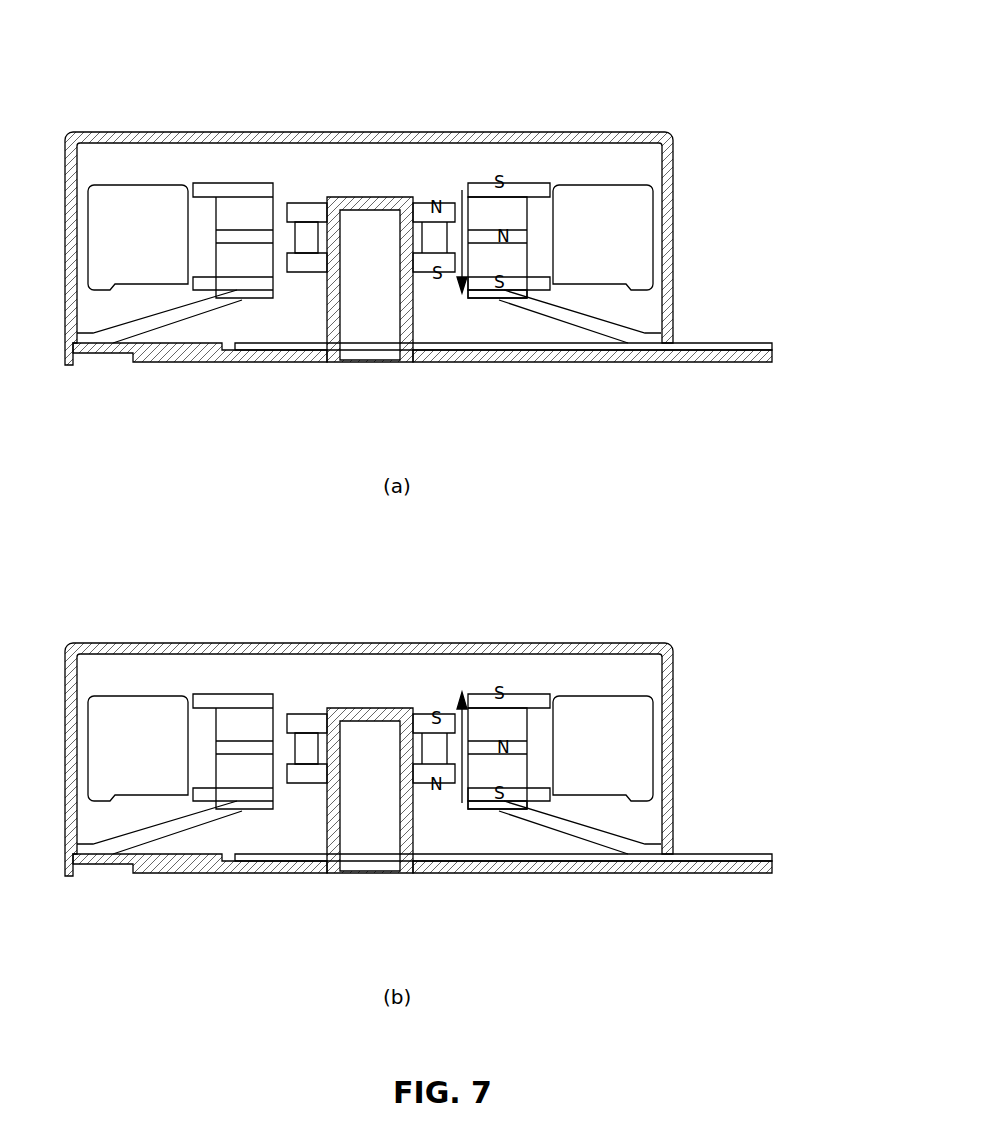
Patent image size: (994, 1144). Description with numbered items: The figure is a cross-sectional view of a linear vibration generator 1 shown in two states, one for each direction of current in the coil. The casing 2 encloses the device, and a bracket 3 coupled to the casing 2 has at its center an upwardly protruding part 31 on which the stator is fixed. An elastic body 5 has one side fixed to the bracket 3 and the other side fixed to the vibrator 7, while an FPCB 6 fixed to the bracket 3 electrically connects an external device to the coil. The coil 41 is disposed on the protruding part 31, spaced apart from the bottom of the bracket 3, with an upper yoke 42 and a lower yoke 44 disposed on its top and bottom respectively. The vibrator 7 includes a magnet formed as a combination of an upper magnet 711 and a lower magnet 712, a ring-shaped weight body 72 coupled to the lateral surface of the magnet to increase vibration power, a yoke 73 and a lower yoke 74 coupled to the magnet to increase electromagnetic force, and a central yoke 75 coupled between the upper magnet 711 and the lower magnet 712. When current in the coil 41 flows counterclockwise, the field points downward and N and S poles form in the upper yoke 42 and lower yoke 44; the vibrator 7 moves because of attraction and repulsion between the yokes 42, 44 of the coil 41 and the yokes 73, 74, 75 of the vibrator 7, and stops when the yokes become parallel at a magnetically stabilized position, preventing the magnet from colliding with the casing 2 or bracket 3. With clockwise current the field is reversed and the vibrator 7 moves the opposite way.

The linear vibration generator 1 is at (369, 438).
The casing 2 is at (410, 133).
The bracket 3 is at (618, 363).
The elastic body 5 is at (163, 317).
The FPCB 6 is at (735, 343).
The vibrator 7 is at (593, 507).
The protruding part 31 is at (357, 200).
The coil 41 is at (315, 237).
The upper yoke 42 is at (292, 203).
The lower yoke 44 is at (292, 268).
The weight body 72 is at (640, 227).
The upper yoke 73 is at (520, 192).
The lower yoke 74 is at (528, 300).
The central yoke 75 is at (476, 296).
The upper magnet 711 is at (492, 215).
The lower magnet 712 is at (497, 297).